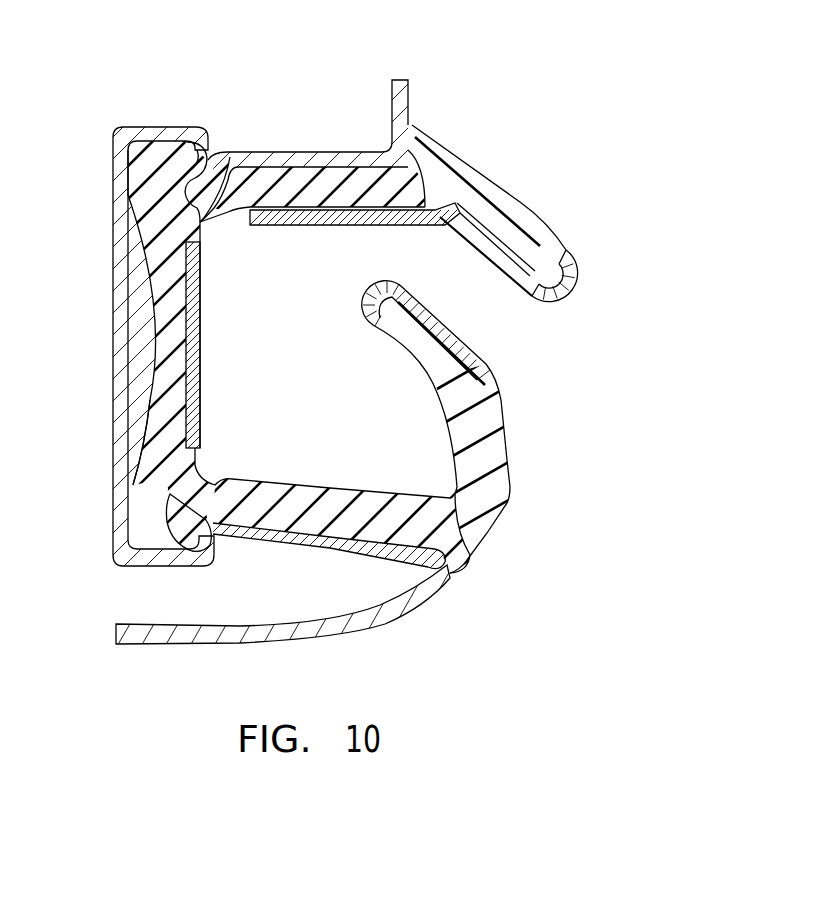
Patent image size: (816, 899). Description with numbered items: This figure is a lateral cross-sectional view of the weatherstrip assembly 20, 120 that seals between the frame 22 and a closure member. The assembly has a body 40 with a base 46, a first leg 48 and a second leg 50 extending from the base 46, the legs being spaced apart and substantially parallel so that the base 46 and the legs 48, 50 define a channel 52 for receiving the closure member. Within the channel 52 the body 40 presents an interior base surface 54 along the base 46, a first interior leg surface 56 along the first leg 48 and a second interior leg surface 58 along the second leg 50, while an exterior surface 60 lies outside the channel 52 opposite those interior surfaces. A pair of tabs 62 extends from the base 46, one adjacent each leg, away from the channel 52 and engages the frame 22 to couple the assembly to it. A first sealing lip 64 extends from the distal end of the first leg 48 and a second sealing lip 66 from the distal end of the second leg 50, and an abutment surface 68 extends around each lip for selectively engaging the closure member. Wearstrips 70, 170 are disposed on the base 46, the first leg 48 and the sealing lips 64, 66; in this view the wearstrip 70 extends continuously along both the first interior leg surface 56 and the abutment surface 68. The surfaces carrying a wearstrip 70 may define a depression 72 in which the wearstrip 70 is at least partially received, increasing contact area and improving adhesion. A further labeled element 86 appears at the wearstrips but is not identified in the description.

The weatherstrip assembly 20 is at (302, 341).
The weatherstrip assembly 120 is at (437, 85).
The frame 22 is at (118, 130).
The body 40 is at (133, 259).
The base 46 is at (145, 460).
The first leg 48 is at (263, 183).
The second leg 50 is at (337, 525).
The channel 52 is at (209, 250).
The interior base surface 54 is at (192, 460).
The first interior leg surface 56 is at (228, 290).
The second interior leg surface 58 is at (343, 487).
The exterior surface 60 is at (378, 547).
The tab 62 is at (178, 225).
The first sealing lip 64 is at (470, 167).
The second sealing lip 66 is at (470, 417).
The abutment surface 68 is at (518, 204).
The wearstrip 70 is at (290, 323).
The wearstrip 170 is at (312, 216).
The depression 72 is at (150, 276).
The adhesive strip 86 is at (323, 223).